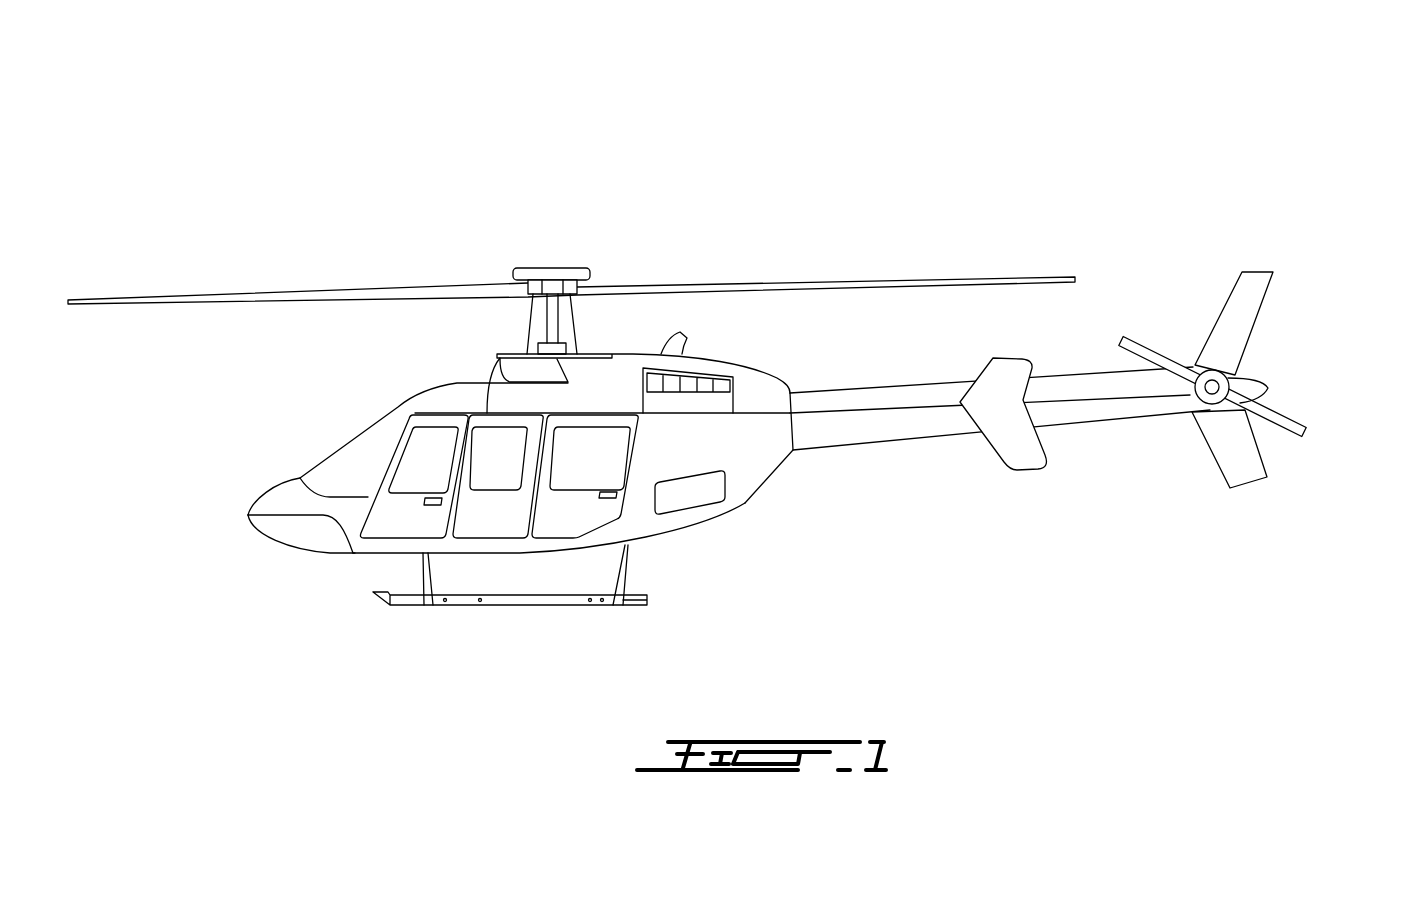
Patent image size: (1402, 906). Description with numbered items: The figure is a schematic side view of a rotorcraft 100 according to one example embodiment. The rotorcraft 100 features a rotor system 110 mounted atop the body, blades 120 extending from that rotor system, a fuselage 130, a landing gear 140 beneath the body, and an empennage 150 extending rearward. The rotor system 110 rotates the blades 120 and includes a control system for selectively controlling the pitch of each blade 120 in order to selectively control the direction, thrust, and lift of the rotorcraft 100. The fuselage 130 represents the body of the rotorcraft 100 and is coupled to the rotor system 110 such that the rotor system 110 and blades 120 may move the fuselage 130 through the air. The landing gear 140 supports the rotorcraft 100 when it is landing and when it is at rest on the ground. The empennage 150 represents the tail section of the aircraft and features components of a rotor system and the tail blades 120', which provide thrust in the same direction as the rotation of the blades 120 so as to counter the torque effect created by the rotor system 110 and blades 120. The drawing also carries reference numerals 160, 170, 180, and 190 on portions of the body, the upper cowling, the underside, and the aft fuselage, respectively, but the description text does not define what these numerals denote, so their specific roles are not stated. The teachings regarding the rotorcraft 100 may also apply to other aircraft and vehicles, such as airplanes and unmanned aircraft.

The rotorcraft 100 is at (280, 141).
The rotor system 110 is at (551, 268).
The blades 120 is at (571, 245).
The blades 120' is at (1259, 380).
The fuselage 130 is at (300, 548).
The landing gear 140 is at (467, 605).
The empennage 150 is at (895, 445).
The cabin 160 is at (637, 520).
The engine cowling 170 is at (613, 357).
The fuselage belly 180 is at (507, 553).
The aft fuselage 190 is at (767, 488).